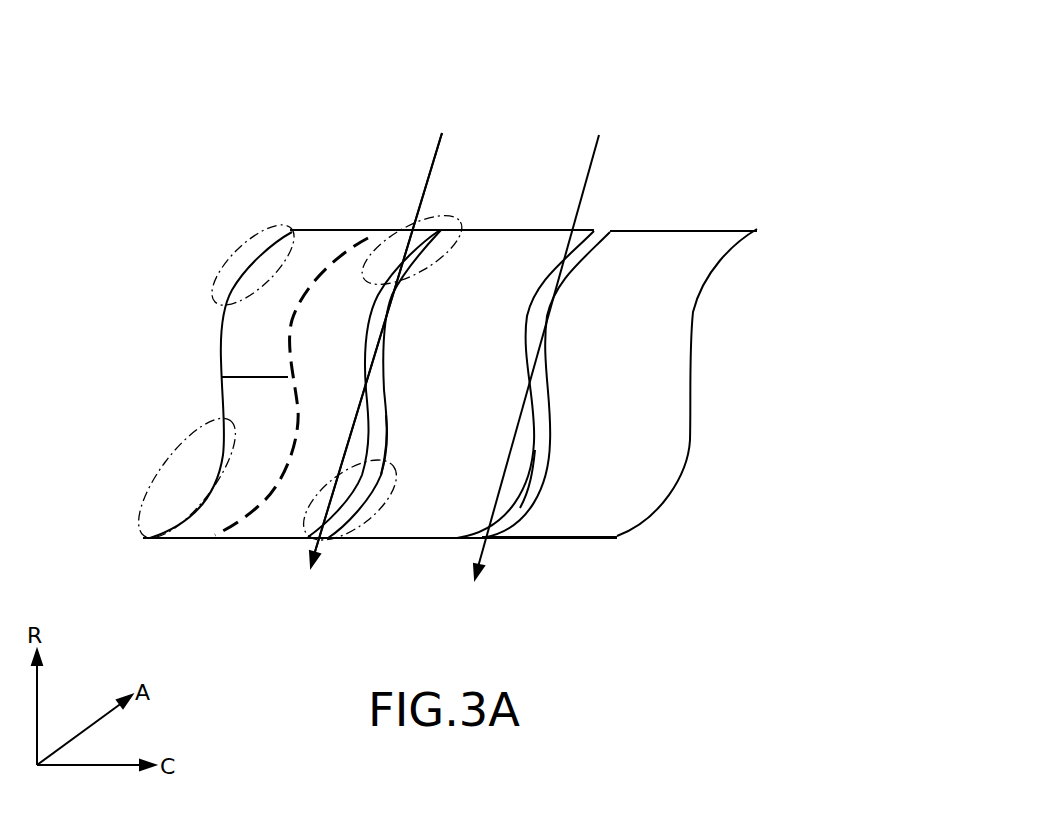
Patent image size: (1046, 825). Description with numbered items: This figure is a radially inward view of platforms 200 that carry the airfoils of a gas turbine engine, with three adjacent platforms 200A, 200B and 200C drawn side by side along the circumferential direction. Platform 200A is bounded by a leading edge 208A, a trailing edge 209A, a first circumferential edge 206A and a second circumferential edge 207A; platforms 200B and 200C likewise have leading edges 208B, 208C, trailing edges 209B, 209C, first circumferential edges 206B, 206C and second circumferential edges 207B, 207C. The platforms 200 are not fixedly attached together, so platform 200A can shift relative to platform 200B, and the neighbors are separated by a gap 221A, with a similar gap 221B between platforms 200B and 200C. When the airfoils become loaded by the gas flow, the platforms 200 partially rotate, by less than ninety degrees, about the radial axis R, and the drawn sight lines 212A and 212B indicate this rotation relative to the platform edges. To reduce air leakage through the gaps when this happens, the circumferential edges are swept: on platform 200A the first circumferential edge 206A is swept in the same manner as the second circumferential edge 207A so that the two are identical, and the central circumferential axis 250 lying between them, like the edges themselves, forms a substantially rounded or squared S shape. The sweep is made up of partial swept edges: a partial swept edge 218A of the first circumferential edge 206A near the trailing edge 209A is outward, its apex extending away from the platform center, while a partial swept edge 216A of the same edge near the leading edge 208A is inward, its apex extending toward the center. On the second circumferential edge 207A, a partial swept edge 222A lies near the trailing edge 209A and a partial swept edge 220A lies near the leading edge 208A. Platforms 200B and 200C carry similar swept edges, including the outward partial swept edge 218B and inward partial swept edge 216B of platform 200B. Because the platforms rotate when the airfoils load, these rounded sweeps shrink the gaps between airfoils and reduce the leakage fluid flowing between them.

The platforms 200 is at (720, 402).
The platform 200A is at (340, 140).
The platform 200B is at (500, 125).
The platform 200C is at (695, 140).
The first circumferential edge 206A is at (220, 322).
The first circumferential edge 206B is at (387, 372).
The first circumferential edge 206C is at (546, 365).
The second circumferential edge 207A is at (366, 331).
The second circumferential edge 207B is at (529, 436).
The second circumferential edge 207C is at (688, 425).
The leading edge 208A is at (212, 538).
The leading edge 208B is at (403, 538).
The leading edge 208C is at (560, 537).
The trailing edge 209A is at (303, 230).
The trailing edge 209B is at (475, 230).
The trailing edge 209C is at (653, 229).
The stacking axis of first vane 212A is at (423, 202).
The stacking axis of second vane 212B is at (585, 200).
The partial swept edge 216A is at (163, 483).
The partial swept edge 216B is at (367, 538).
The partial swept edge 218A is at (225, 263).
The partial swept edge 218B is at (435, 273).
The partial swept edge 220A is at (293, 538).
The gap 221A is at (383, 438).
The gap 221B is at (534, 467).
The partial swept edge 222A is at (366, 259).
The central circumferential axis 250 is at (222, 377).